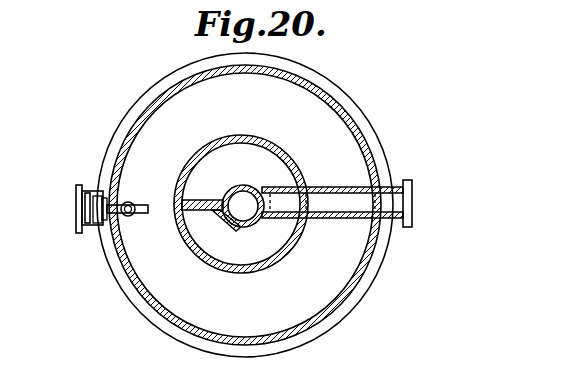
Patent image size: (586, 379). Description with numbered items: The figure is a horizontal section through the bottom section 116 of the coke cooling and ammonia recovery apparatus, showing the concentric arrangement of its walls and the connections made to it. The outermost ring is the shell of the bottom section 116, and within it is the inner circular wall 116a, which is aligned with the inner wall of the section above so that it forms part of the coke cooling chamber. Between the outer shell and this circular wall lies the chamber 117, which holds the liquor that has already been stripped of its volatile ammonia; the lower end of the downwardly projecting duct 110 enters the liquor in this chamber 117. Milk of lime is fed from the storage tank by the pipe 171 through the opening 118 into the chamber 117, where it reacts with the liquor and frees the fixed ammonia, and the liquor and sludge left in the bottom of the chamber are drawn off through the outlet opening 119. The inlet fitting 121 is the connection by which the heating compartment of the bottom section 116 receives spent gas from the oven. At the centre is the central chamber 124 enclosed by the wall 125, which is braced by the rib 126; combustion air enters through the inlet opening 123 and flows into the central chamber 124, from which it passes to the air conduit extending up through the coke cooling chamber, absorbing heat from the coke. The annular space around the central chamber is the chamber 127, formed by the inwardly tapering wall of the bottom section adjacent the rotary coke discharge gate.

The bottom section 116 is at (375, 133).
The inner circular wall 116a is at (243, 131).
The chamber 117 is at (308, 128).
The opening 118 is at (99, 220).
The outlet opening 119 is at (88, 196).
The inlet fitting 121 is at (78, 209).
The downwardly projecting duct 110 is at (131, 203).
The pipe 171 is at (141, 214).
The inlet opening 123 is at (340, 198).
The central chamber 124 is at (243, 206).
The wall 125 is at (236, 229).
The rib 126 is at (199, 201).
The chamber 127 is at (240, 159).